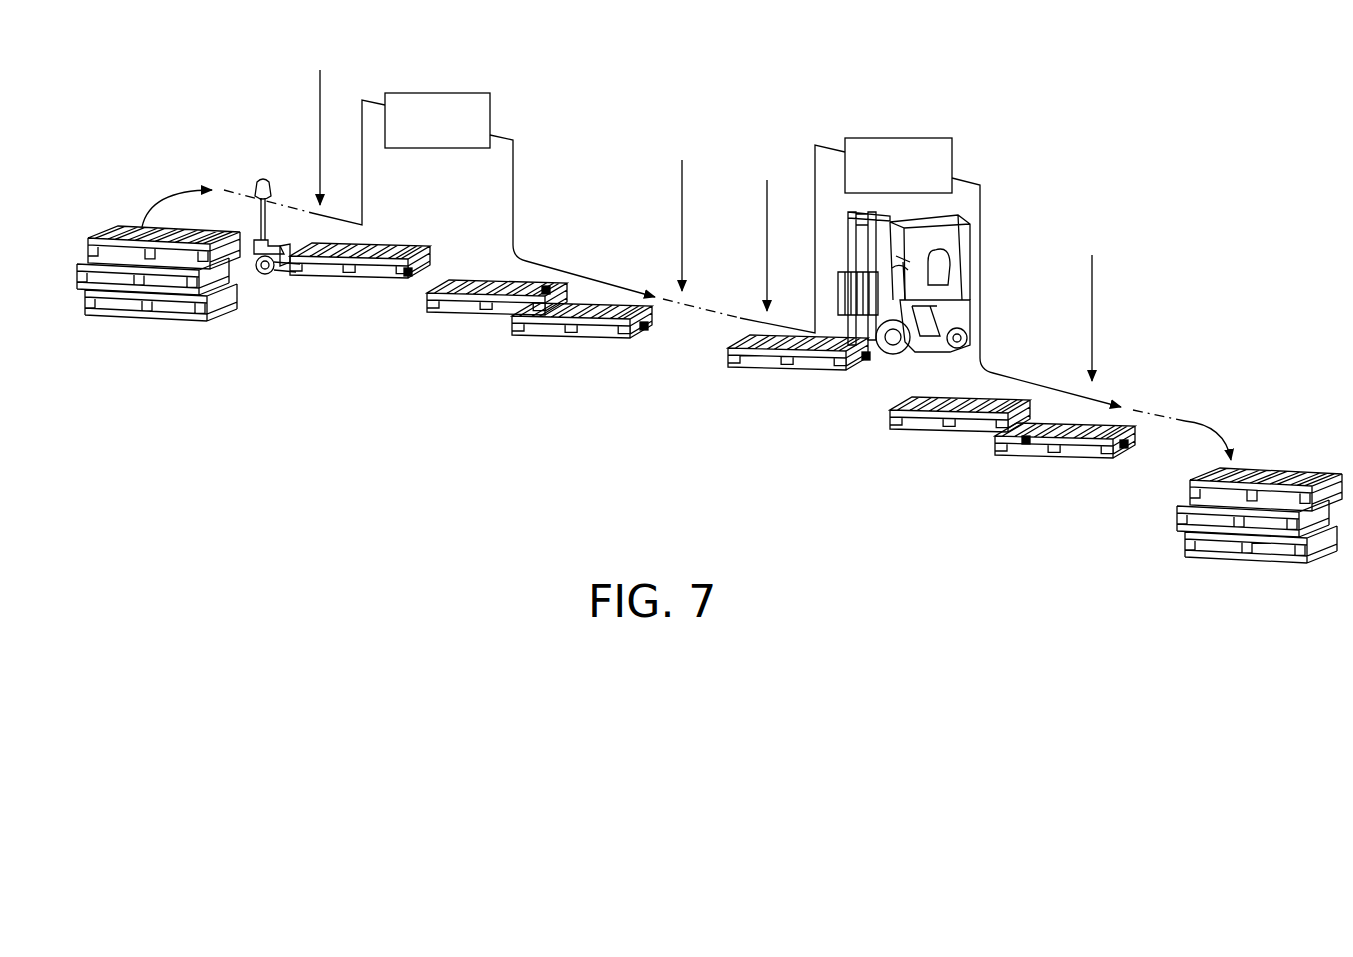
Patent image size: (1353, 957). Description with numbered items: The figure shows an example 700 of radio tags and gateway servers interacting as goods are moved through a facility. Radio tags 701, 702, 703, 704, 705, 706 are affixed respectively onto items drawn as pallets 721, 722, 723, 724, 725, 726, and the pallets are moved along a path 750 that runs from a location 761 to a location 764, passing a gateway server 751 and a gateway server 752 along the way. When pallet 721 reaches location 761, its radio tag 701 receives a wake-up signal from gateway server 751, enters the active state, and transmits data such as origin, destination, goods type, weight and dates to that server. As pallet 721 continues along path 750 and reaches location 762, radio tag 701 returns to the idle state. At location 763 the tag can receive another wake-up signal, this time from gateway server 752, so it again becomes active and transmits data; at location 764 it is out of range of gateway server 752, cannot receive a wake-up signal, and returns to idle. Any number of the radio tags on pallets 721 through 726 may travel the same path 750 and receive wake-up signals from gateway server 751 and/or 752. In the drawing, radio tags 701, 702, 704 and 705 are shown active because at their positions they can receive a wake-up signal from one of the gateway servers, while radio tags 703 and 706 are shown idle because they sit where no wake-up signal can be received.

The example of radio tags and gateway servers interacting 700 is at (792, 70).
The radio tag 701 is at (410, 277).
The radio tag 702 is at (548, 288).
The radio tag 703 is at (645, 330).
The radio tag 704 is at (868, 364).
The radio tag 705 is at (1027, 446).
The radio tag 706 is at (1125, 448).
The pallet 721 is at (384, 246).
The pallet 722 is at (467, 284).
The pallet 723 is at (591, 322).
The pallet 724 is at (806, 362).
The pallet 725 is at (977, 414).
The pallet 726 is at (1081, 444).
The path 750 is at (1040, 370).
The gateway server 751 is at (438, 93).
The gateway server 752 is at (893, 138).
The location 761 is at (316, 116).
The location 762 is at (678, 199).
The location 763 is at (764, 224).
The location 764 is at (1092, 296).